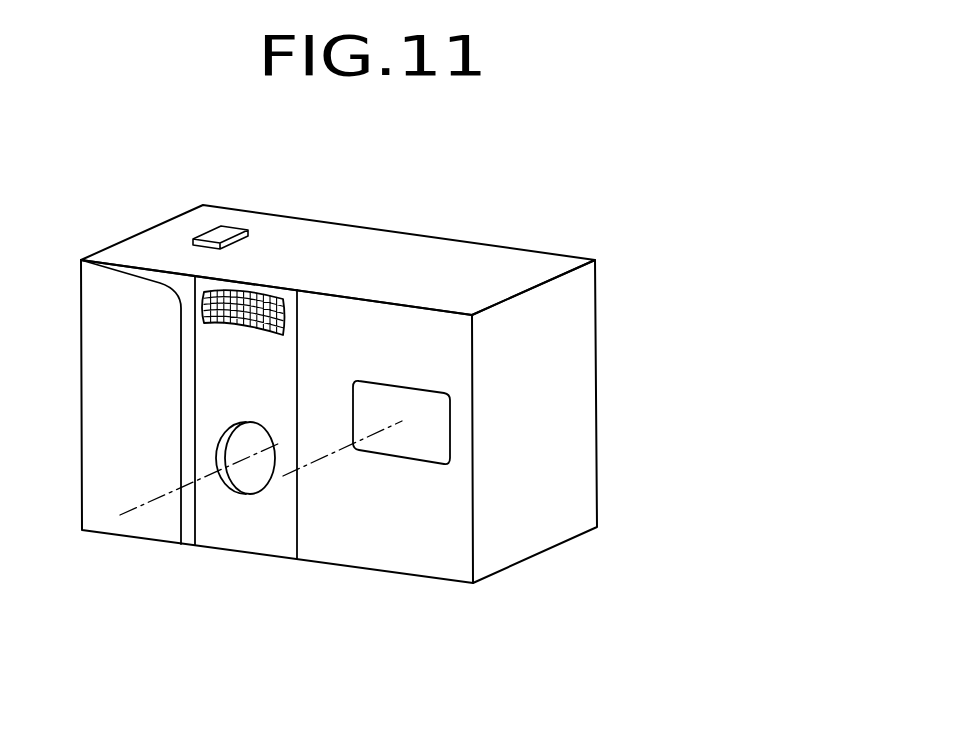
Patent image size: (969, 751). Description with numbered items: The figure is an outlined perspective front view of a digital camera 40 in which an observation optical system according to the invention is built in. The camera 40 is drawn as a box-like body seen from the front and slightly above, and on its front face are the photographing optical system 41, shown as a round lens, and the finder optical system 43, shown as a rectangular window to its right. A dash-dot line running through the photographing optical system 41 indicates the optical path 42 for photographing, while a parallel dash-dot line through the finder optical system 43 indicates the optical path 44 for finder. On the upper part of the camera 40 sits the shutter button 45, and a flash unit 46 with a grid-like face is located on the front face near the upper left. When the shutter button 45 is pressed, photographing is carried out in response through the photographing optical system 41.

The digital camera 40 is at (770, 198).
The photographing optical system 41 is at (258, 472).
The optical path for photographing 42 is at (170, 492).
The finder optical system 43 is at (423, 428).
The optical path for finder 44 is at (327, 455).
The shutter button 45 is at (223, 232).
The flash unit 46 is at (237, 298).